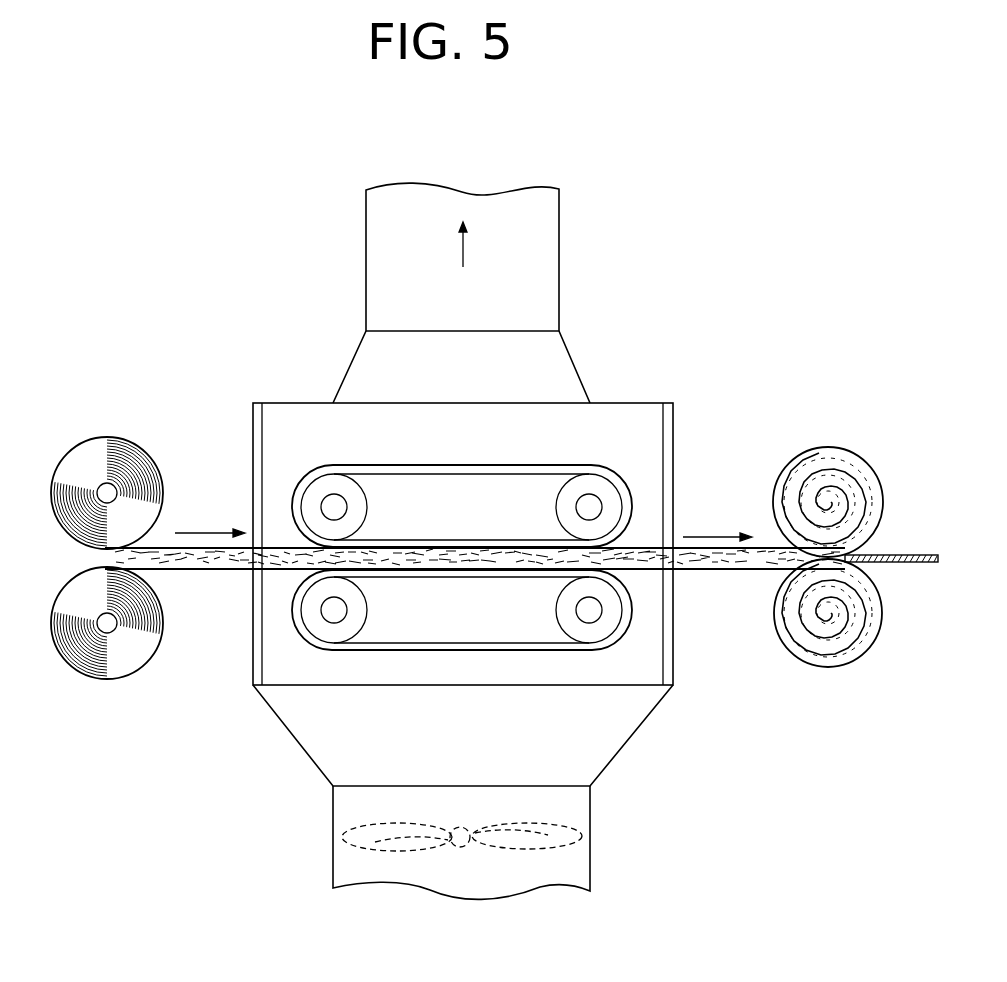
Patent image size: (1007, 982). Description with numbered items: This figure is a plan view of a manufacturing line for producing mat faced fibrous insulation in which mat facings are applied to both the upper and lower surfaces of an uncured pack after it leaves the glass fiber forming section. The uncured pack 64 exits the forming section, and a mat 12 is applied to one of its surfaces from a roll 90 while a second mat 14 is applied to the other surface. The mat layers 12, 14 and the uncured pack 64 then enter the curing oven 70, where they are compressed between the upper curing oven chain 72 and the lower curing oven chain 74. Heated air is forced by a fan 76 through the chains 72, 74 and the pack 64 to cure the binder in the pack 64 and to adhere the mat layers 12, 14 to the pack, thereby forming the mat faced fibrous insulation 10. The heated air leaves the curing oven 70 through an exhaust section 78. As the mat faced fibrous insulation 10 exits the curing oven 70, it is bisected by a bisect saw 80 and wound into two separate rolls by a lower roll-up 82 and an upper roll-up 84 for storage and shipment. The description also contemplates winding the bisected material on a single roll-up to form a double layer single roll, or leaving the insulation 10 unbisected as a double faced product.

The mat faced fibrous insulation 10 is at (710, 508).
The mat 12 is at (160, 548).
The mat 14 is at (207, 570).
The uncured pack 64 is at (173, 562).
The curing oven 70 is at (642, 372).
The upper curing oven chain 72 is at (478, 465).
The lower curing oven chain 74 is at (473, 573).
The fan 76 is at (403, 860).
The exhaust section 78 is at (479, 388).
The bisect saw 80 is at (912, 555).
The lower roll-up 82 is at (830, 673).
The upper roll-up 84 is at (847, 448).
The roll 90 is at (105, 437).